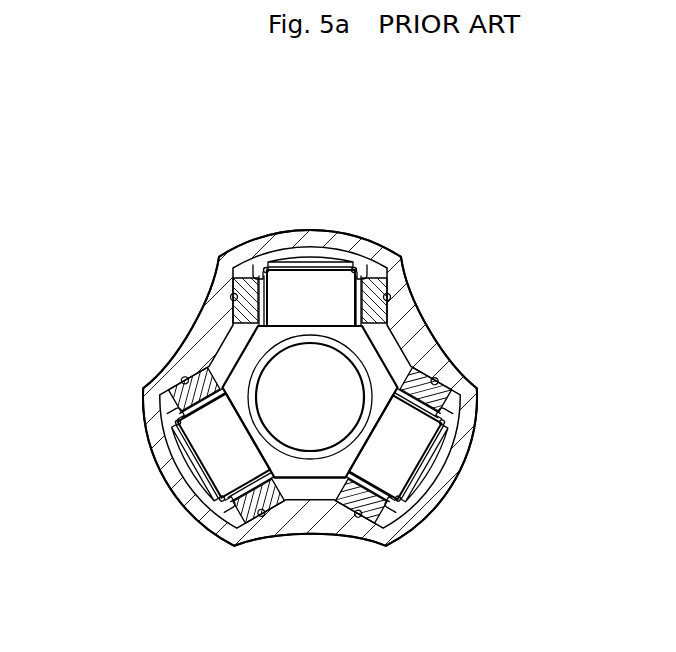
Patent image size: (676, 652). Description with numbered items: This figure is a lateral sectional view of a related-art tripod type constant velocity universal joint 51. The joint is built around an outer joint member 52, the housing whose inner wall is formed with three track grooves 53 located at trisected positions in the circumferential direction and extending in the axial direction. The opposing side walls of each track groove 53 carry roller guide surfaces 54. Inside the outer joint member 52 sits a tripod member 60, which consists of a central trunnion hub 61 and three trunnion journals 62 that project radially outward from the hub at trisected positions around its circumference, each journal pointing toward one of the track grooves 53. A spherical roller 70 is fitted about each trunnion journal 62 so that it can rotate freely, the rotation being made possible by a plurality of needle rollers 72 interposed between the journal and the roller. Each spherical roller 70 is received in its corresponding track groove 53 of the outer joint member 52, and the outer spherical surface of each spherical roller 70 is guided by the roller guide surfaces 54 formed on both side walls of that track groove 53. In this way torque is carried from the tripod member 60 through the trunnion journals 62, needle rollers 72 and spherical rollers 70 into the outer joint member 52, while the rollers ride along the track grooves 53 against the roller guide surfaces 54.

The tripod type constant velocity universal joint 51 is at (283, 212).
The outer joint member 52 is at (217, 258).
The track groove 53 is at (249, 268).
The roller guide surface 54 is at (258, 309).
The tripod member 60 is at (233, 360).
The trunnion hub 61 is at (310, 466).
The trunnion journal 62 is at (308, 285).
The spherical roller 70 is at (360, 297).
The needle rollers 72 is at (378, 283).